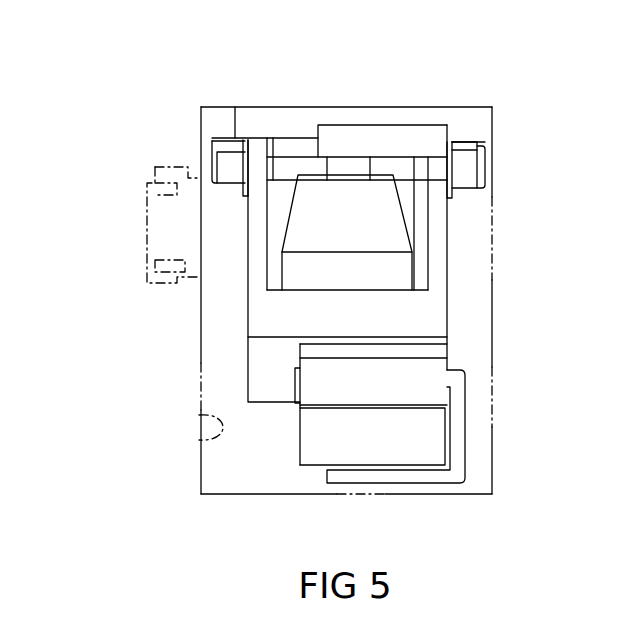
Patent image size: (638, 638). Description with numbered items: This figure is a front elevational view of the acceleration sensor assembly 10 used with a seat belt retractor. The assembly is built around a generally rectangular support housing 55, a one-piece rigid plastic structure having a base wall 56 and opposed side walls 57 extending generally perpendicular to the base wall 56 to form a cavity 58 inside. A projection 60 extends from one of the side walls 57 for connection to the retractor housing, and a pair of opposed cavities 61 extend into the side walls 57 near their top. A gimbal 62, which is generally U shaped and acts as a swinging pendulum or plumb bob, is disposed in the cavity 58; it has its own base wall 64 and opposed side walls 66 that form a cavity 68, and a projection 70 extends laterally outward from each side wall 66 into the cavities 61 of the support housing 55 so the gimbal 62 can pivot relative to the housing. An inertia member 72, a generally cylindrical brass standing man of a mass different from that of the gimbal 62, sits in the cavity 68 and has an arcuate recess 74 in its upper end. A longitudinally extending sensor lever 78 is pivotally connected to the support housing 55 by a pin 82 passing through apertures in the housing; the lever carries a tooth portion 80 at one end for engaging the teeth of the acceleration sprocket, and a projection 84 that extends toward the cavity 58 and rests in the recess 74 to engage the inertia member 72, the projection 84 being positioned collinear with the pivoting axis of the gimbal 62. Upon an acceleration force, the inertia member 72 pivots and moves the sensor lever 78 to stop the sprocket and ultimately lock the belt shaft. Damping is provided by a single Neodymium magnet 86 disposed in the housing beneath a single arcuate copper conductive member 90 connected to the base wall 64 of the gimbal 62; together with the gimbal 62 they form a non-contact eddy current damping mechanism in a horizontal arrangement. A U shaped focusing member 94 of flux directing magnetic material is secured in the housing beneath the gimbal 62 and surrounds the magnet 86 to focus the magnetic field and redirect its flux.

The acceleration sensor assembly 10 is at (147, 146).
The support housing 55 is at (492, 272).
The base wall 56 is at (390, 497).
The side walls 57 is at (197, 363).
The cavity 58 is at (199, 435).
The projection 60 is at (155, 215).
The cavities 61 is at (229, 158).
The gimbal 62 is at (447, 294).
The base wall 64 is at (285, 310).
The side walls 66 is at (256, 270).
The cavity 68 is at (427, 217).
The projection 70 is at (240, 140).
The inertia member 72 is at (380, 188).
The recess 74 is at (312, 175).
The sensor lever 78 is at (346, 125).
The tooth portion 80 is at (318, 125).
The pin 82 is at (465, 143).
The projection 84 is at (338, 168).
The magnet 86 is at (427, 445).
The conductive member 90 is at (318, 385).
The focusing member 94 is at (457, 423).